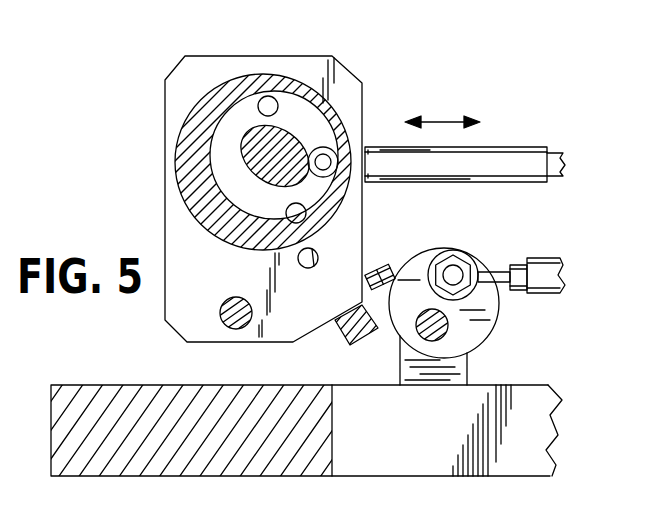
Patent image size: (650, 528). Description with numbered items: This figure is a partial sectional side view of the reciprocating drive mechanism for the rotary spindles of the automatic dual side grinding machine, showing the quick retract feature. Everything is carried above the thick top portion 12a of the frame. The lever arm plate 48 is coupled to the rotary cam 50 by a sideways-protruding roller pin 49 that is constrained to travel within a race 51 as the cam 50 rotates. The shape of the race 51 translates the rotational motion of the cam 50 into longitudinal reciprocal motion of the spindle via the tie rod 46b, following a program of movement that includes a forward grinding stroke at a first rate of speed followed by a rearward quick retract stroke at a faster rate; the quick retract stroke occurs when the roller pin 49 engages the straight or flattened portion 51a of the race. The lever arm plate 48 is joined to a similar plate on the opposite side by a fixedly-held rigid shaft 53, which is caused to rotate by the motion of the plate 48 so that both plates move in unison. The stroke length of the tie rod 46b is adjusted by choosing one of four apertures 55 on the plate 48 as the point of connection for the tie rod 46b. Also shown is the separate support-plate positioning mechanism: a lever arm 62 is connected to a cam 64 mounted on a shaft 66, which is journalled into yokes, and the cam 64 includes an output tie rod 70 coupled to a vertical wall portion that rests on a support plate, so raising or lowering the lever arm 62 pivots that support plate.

The top portion 12a is at (141, 384).
The tie rod 46b is at (478, 147).
The lever arm plate 48 is at (358, 78).
The roller pin 49 is at (321, 150).
The rotary cam 50 is at (280, 74).
The race 51 is at (303, 115).
The flattened portion of the race 51a is at (240, 167).
The rigid shaft 53 is at (241, 330).
The apertures 55 is at (258, 108).
The lever arm 62 is at (382, 265).
The cam 64 is at (499, 296).
The shaft 66 is at (452, 326).
The output tie rod 70 is at (533, 258).